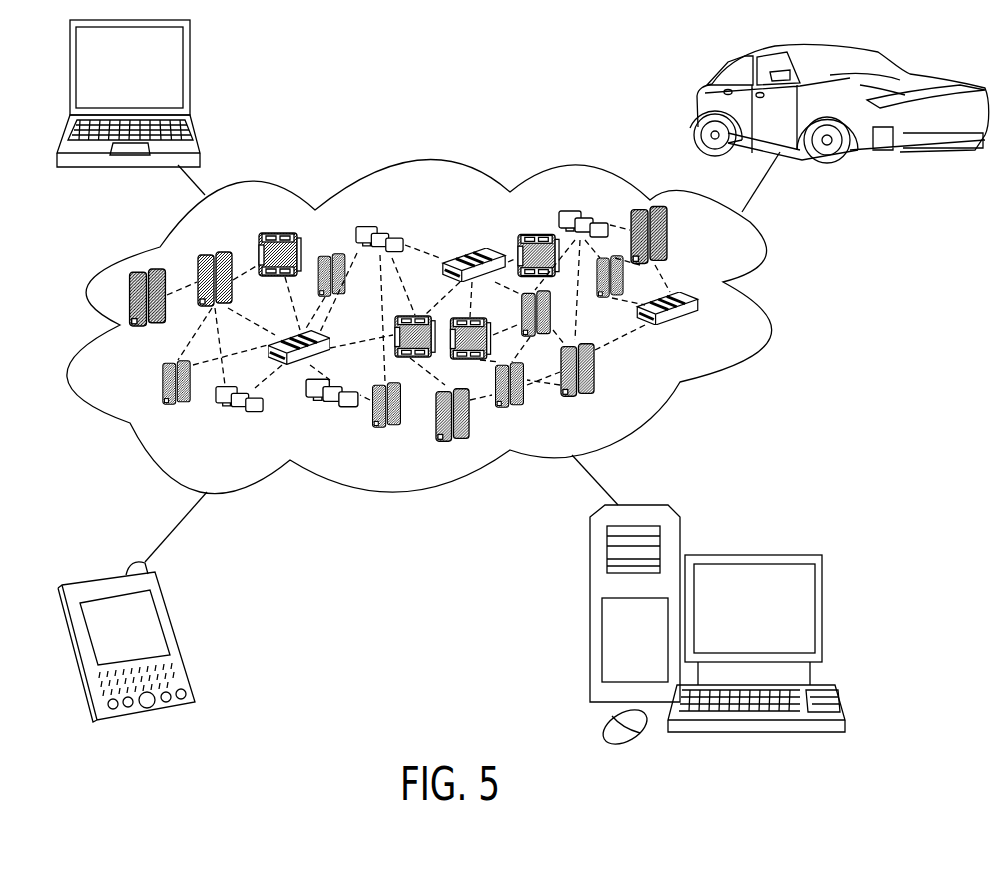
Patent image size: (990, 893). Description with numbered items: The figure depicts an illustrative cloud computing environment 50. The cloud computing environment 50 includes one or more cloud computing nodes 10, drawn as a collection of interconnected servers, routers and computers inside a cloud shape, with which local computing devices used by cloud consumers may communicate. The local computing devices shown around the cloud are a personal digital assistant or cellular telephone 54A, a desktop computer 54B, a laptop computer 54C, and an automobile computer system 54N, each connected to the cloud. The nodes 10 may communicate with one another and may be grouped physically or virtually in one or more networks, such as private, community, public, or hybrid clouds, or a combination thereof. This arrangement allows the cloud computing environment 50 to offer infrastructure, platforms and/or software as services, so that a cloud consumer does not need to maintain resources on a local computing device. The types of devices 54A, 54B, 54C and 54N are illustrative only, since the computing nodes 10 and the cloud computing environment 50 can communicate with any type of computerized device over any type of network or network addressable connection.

The cloud computing environment 50 is at (770, 318).
The cloud computing nodes 10 is at (716, 333).
The personal digital assistant or cellular telephone 54A is at (180, 627).
The desktop computer 54B is at (787, 553).
The laptop computer 54C is at (189, 81).
The automobile computer system 54N is at (903, 63).